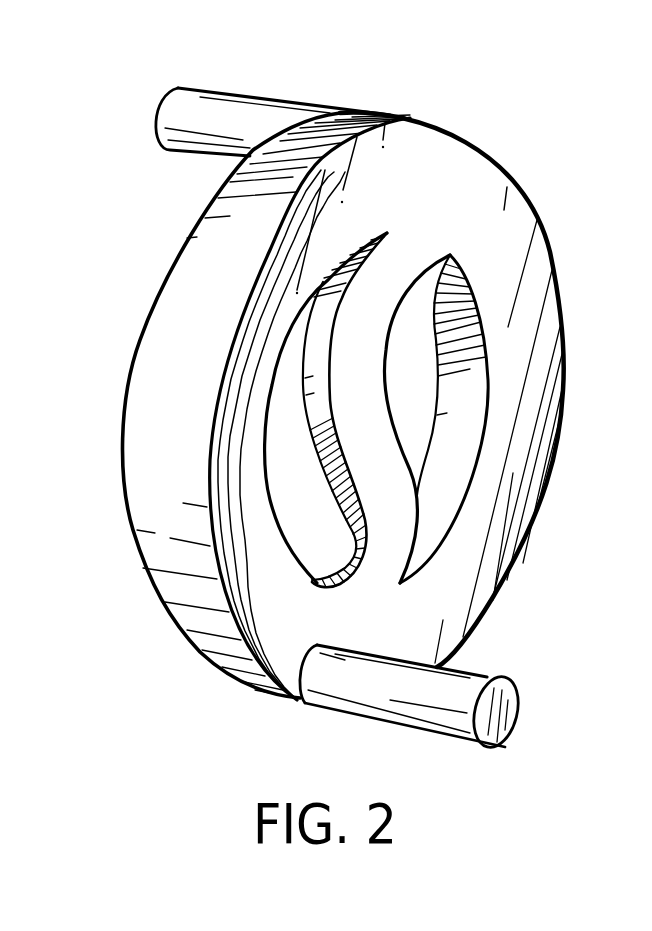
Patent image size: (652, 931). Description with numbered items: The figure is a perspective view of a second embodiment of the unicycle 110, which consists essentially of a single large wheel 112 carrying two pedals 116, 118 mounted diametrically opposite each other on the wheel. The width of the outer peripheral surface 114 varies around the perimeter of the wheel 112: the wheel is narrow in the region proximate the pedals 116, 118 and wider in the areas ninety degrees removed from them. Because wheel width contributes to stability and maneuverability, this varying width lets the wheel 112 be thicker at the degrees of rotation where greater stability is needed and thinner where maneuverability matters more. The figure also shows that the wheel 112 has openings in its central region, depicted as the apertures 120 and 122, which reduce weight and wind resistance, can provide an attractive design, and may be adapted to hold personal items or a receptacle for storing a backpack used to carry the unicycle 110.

The unicycle 110 is at (357, 387).
The wheel 112 is at (492, 203).
The outer peripheral surface 114 is at (203, 287).
The pedal 116 is at (460, 690).
The pedal 118 is at (233, 114).
The aperture 120 is at (418, 385).
The aperture 122 is at (300, 497).